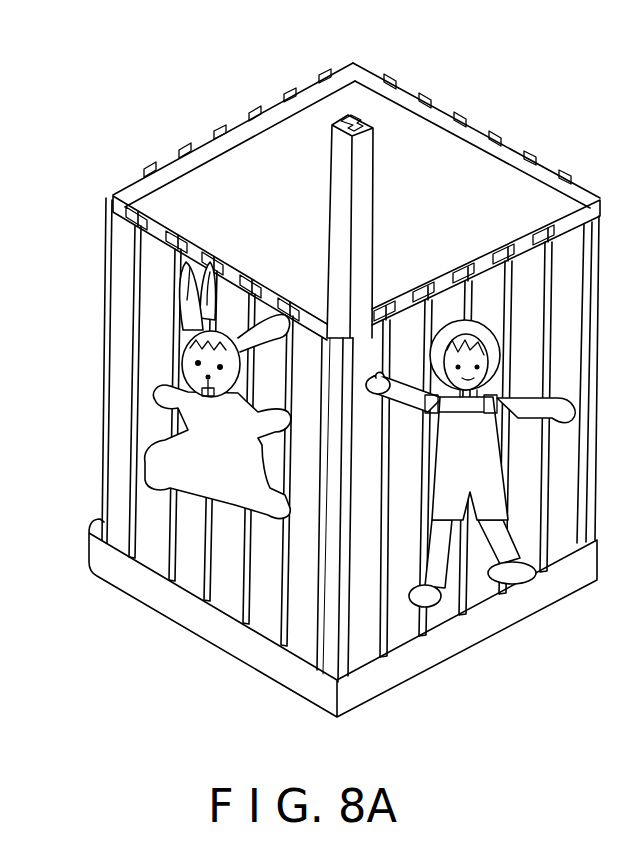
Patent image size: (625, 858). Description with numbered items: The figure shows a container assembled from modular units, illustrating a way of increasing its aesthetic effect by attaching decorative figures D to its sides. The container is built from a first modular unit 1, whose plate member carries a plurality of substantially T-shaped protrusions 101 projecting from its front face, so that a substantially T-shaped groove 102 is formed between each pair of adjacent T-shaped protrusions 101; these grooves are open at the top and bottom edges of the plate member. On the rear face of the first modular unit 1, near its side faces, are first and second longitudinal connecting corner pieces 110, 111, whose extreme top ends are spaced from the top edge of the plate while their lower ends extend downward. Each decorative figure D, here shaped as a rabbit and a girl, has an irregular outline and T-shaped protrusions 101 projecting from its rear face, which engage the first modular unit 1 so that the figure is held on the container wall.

The first modular unit 1 is at (135, 147).
The T-shaped protrusions 101 is at (170, 333).
The T-shaped groove 102 is at (218, 262).
The first longitudinal connecting corner piece 110 is at (374, 135).
The second longitudinal connecting corner piece 111 is at (356, 118).
The decorative figures D is at (200, 436).